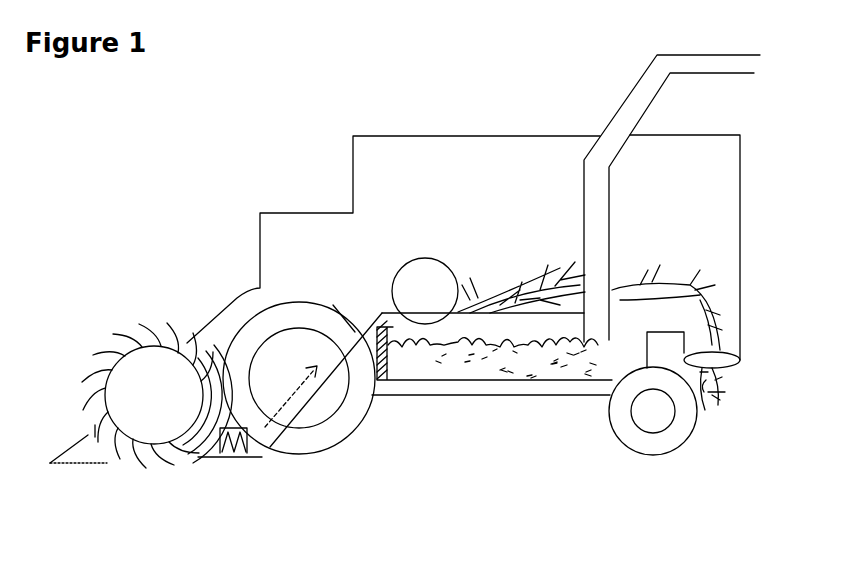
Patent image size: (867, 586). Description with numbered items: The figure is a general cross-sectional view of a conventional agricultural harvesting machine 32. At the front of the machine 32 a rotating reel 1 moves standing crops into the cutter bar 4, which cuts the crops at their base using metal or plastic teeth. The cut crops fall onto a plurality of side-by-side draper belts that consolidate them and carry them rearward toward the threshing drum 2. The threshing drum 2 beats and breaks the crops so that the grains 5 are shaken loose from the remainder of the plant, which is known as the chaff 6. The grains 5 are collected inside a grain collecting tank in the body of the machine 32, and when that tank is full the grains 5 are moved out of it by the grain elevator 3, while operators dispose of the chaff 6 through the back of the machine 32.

The reel 1 is at (152, 392).
The threshing drum 2 is at (422, 287).
The grain elevator 3 is at (602, 213).
The cutter bar 4 is at (245, 437).
The grains 5 is at (435, 372).
The chaff 6 is at (730, 390).
The harvesting machine 32 is at (210, 180).